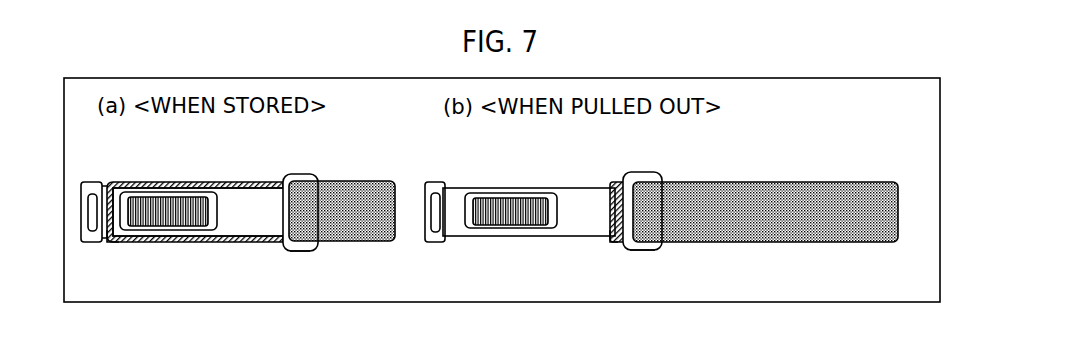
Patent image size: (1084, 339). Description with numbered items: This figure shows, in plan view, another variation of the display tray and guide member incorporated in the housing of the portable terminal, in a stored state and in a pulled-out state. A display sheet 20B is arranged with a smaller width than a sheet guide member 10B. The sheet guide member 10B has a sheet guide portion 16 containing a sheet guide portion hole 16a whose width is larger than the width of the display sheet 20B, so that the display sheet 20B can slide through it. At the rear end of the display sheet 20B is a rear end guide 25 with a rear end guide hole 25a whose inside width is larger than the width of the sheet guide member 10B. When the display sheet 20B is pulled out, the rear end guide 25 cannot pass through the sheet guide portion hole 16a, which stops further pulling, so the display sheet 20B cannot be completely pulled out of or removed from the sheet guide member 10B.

The sheet guide member 10B is at (370, 190).
The display sheet 20B is at (240, 200).
The sheet guide portion 16 is at (140, 182).
The sheet guide portion hole 16a is at (119, 242).
The rear end guide 25 is at (300, 175).
The rear end guide hole 25a is at (297, 250).